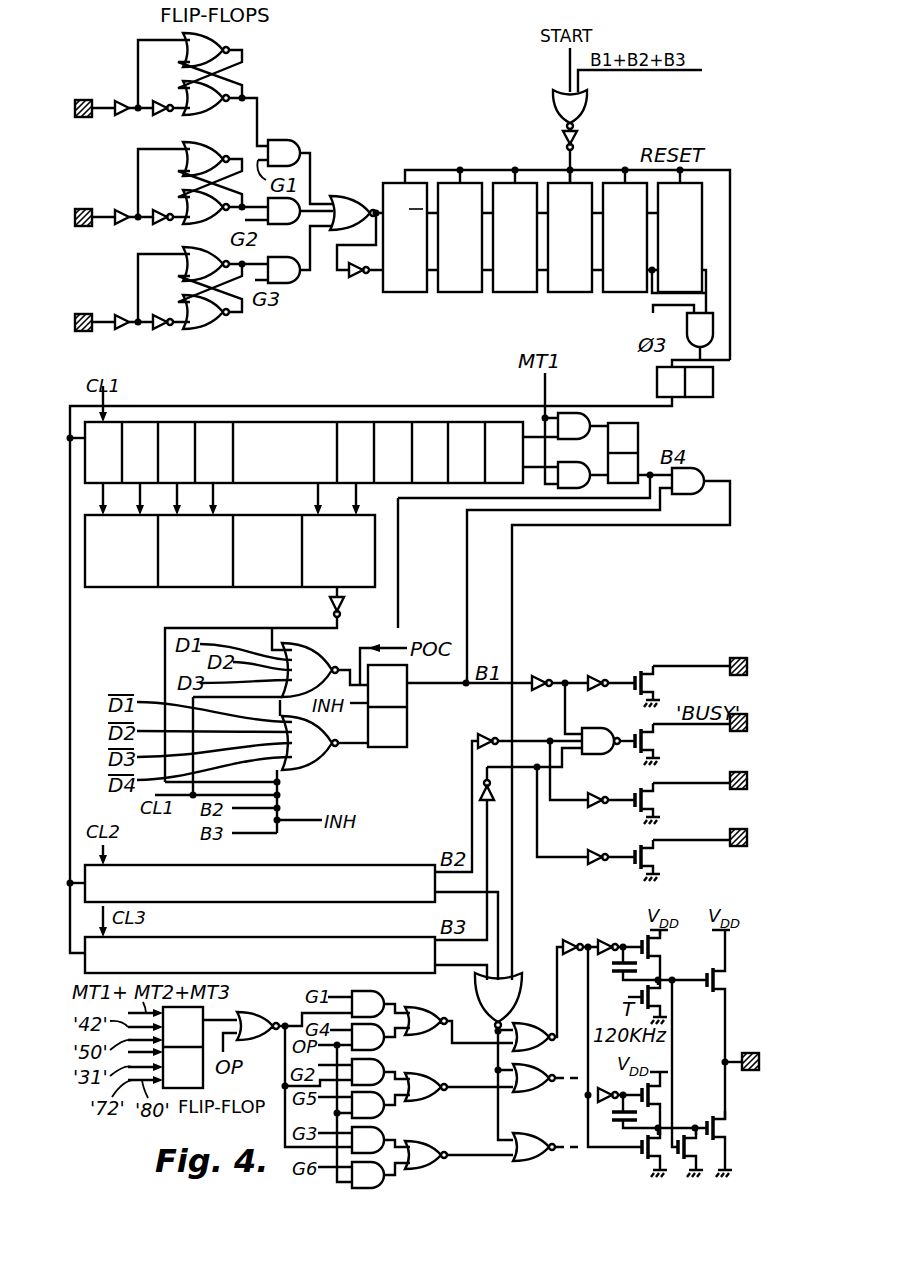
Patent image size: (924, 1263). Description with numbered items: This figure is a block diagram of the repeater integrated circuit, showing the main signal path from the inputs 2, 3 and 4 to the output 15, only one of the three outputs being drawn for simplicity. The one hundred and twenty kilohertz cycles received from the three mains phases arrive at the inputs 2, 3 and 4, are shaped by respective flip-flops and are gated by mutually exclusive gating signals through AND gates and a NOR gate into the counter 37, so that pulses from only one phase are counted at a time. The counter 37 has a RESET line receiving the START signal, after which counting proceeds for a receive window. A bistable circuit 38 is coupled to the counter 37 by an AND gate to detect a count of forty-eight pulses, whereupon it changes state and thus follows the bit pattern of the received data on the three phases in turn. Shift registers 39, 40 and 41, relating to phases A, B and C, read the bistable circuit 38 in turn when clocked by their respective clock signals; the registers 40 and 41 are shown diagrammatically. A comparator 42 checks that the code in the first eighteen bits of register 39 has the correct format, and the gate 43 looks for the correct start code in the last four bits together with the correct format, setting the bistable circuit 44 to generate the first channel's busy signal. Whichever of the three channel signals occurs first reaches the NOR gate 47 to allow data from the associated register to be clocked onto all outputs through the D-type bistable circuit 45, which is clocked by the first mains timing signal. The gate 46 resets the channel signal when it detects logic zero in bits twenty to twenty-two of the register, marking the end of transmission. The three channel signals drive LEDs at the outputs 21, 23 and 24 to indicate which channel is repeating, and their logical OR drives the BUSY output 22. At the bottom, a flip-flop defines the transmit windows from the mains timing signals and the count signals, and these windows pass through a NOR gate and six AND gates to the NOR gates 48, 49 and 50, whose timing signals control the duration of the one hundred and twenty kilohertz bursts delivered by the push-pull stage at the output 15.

The input 2 is at (83, 100).
The input 3 is at (82, 196).
The input 4 is at (82, 301).
The output 15 is at (751, 1053).
The output 21 is at (737, 657).
The BUSY output 22 is at (738, 732).
The output 23 is at (738, 790).
The output 24 is at (738, 847).
The counter 37 is at (484, 183).
The bistable circuit 38 is at (650, 383).
The shift register 39 is at (253, 422).
The shift register 40 is at (260, 883).
The shift register 41 is at (260, 955).
The comparator 42 is at (130, 594).
The gate 43 is at (311, 748).
The bistable circuit 44 is at (418, 738).
The D-type bistable circuit 45 is at (646, 437).
The gate 46 is at (300, 656).
The NOR gate 47 is at (526, 988).
The NOR gate 48 is at (422, 1014).
The NOR gate 49 is at (422, 1085).
The NOR gate 50 is at (422, 1153).